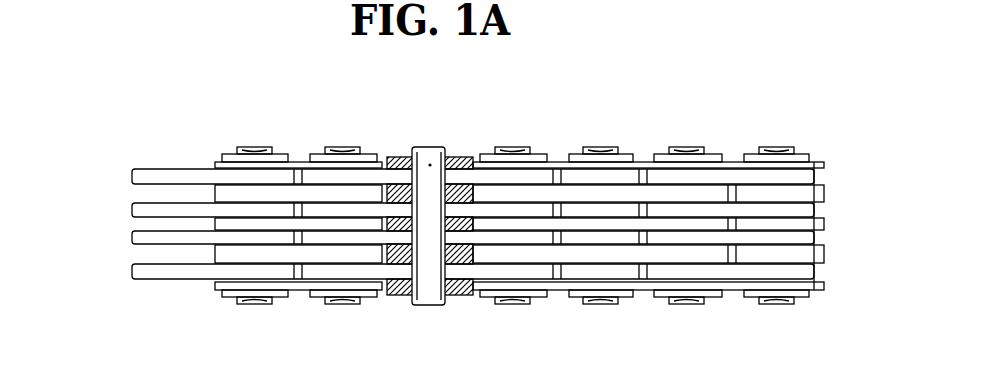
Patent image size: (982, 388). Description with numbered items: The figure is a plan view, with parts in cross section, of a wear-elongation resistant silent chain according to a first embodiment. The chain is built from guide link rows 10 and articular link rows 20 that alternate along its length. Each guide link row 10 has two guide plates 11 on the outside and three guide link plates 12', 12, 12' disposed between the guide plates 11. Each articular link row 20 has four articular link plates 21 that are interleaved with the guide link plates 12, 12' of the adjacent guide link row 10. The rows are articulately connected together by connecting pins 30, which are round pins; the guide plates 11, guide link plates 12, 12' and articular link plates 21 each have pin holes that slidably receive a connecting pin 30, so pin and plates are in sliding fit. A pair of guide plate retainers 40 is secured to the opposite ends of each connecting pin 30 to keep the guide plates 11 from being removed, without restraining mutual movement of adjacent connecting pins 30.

The guide link row 10 is at (728, 144).
The guide plate 11 is at (824, 165).
The guide link plate 12 is at (547, 226).
The guide link plate 12' is at (548, 225).
The articular link row 20 is at (303, 314).
The articular link plate 21 is at (131, 177).
The connecting pin 30 is at (778, 147).
The guide plate retainer 40 is at (807, 160).